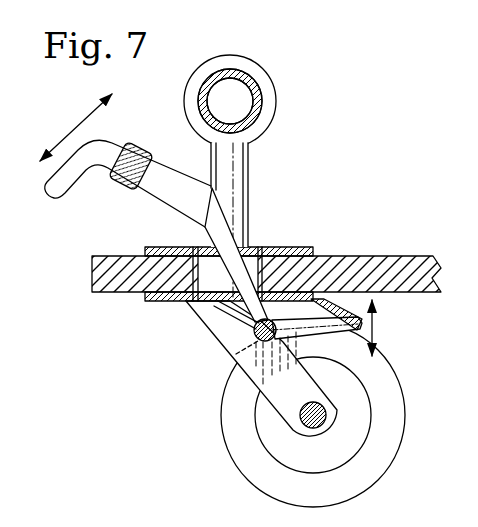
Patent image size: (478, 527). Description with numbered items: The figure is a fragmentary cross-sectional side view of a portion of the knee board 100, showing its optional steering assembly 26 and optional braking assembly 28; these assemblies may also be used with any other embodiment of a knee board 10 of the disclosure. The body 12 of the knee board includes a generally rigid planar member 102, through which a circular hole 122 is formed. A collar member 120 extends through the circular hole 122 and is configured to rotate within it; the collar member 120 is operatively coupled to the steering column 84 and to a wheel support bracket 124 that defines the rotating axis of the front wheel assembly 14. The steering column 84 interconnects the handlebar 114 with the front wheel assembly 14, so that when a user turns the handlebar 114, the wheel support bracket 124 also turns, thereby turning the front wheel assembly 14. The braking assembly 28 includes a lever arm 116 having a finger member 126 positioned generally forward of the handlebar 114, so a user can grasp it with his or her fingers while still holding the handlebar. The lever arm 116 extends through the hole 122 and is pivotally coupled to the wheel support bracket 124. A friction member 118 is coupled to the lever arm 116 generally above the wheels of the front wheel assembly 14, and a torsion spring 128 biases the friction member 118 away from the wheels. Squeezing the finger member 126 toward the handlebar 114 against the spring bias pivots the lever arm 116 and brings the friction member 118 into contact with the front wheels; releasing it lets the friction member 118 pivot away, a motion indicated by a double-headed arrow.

The knee board 10 is at (363, 40).
The body 12 is at (369, 253).
The front wheel assembly 14 is at (220, 417).
The steering assembly 26 is at (339, 137).
The braking assembly 28 is at (325, 108).
The steering column 84 is at (210, 163).
The knee board 100 is at (337, 42).
The rigid planar member 102 is at (391, 257).
The handlebar 114 is at (276, 88).
The lever arm 116 is at (86, 183).
The friction member 118 is at (338, 292).
The collar member 120 is at (288, 247).
The circular hole 122 is at (259, 248).
The wheel support bracket 124 is at (198, 318).
The finger member 126 is at (48, 188).
The torsion spring 128 is at (232, 324).